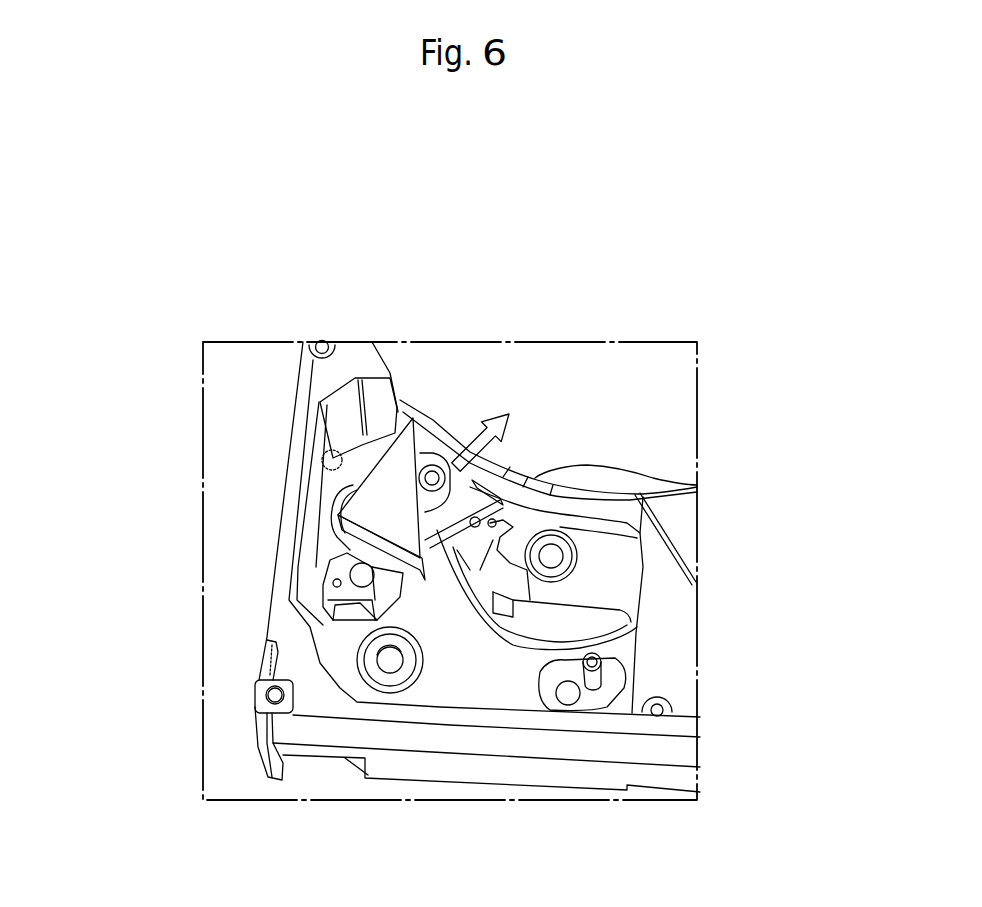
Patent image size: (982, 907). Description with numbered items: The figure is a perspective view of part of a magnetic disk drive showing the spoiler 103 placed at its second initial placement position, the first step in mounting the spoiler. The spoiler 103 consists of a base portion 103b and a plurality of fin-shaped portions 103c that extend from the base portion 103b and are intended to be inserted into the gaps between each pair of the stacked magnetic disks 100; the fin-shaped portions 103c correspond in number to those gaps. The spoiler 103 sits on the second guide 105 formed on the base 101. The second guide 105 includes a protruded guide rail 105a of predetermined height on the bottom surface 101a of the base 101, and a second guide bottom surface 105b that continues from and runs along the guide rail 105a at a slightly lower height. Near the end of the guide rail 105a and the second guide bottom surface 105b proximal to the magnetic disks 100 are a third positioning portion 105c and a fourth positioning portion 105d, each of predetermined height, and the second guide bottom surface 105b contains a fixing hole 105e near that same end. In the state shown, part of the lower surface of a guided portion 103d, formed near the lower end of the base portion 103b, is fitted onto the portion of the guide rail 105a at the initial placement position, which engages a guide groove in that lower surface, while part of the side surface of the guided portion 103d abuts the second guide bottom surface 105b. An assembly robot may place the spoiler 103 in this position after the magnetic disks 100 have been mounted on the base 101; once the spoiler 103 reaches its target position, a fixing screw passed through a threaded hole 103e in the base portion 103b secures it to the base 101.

The magnetic disks 100 is at (463, 378).
The base 101 is at (317, 378).
The bottom surface 101a is at (452, 667).
The spoiler 103 is at (84, 440).
The base portion 103b is at (340, 563).
The fin-shaped portions 103c is at (380, 505).
The guided portion 103d is at (330, 600).
The threaded hole 103e is at (365, 555).
The second guide 105 is at (858, 445).
The guide rail 105a is at (580, 650).
The second guide bottom surface 105b is at (600, 640).
The third positioning portion 105c is at (690, 477).
The fourth positioning portion 105d is at (642, 537).
The fixing hole 105e is at (530, 600).